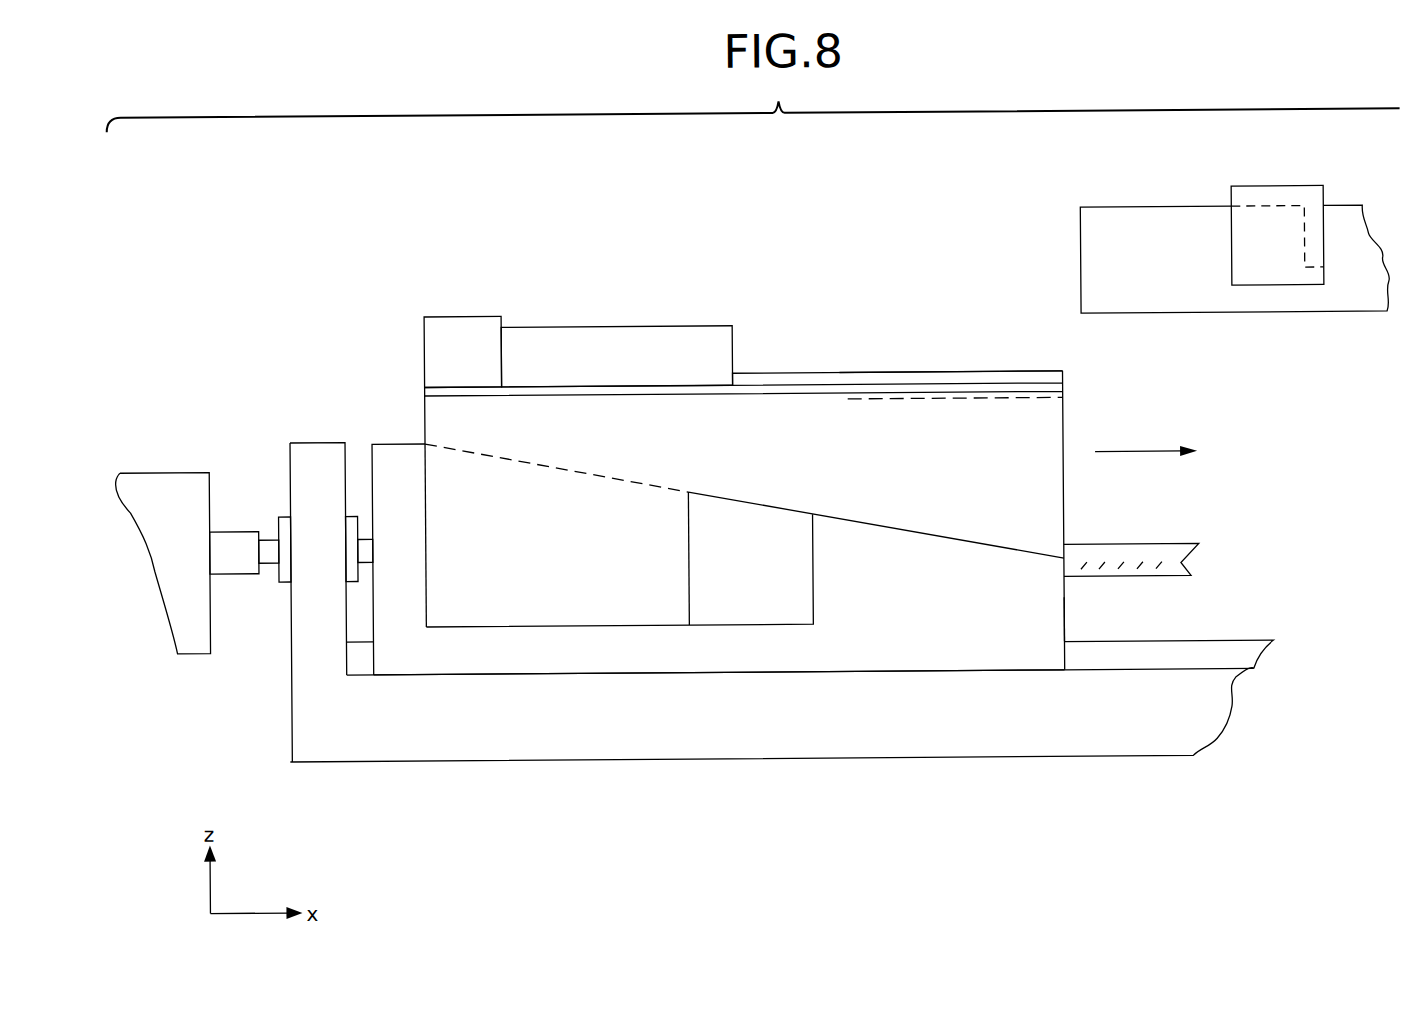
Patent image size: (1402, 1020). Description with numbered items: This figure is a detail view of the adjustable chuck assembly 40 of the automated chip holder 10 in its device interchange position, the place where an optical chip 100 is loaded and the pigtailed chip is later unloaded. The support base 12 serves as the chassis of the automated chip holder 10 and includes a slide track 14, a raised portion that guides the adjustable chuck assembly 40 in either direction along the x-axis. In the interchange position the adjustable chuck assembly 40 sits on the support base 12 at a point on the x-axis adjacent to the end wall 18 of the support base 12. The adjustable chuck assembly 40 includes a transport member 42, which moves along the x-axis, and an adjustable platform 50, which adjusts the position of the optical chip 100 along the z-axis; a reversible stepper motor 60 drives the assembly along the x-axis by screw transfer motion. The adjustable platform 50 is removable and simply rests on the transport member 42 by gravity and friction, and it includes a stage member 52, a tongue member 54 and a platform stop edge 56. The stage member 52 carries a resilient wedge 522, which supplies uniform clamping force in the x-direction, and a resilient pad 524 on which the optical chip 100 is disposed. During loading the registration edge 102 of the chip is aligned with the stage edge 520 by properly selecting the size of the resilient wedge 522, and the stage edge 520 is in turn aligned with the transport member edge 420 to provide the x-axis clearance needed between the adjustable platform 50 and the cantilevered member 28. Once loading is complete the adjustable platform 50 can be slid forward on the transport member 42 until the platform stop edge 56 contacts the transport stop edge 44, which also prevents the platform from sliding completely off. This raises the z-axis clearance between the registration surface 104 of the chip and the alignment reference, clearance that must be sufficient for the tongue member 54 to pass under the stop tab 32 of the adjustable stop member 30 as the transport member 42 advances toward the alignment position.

The automated chip holder 10 is at (448, 211).
The support base 12 is at (1112, 728).
The slide track 14 is at (1240, 655).
The end wall 18 is at (300, 661).
The cantilevered member 28 is at (1148, 219).
The adjustable stop member 30 is at (1258, 196).
The stop tab 32 is at (1318, 236).
The adjustable chuck assembly 40 is at (664, 240).
The transport member 42 is at (527, 652).
The transport stop edge 44 is at (812, 570).
The adjustable platform 50 is at (755, 418).
The stage member 52 is at (977, 383).
The tongue member 54 is at (442, 317).
The platform stop edge 56 is at (688, 541).
The stepper motor 60 is at (182, 488).
The optical chip 100 is at (805, 378).
The registration edge 102 is at (1063, 383).
The registration surface 104 is at (873, 371).
The transport member edge 420 is at (1063, 616).
The stage edge 520 is at (1063, 491).
The resilient wedge 522 is at (614, 346).
The resilient pad 524 is at (1037, 388).